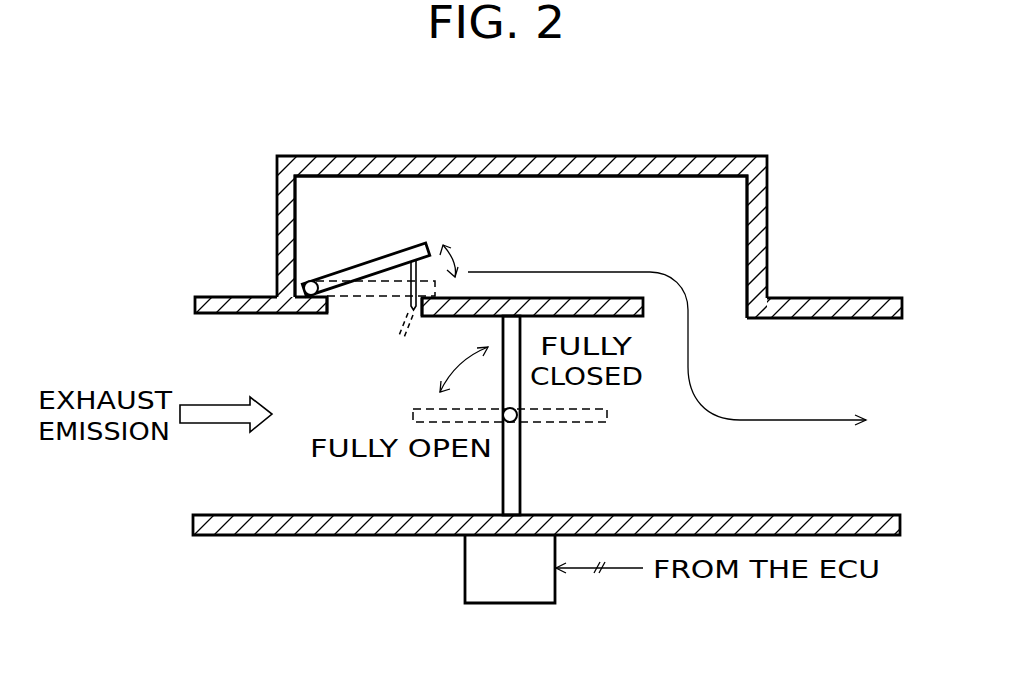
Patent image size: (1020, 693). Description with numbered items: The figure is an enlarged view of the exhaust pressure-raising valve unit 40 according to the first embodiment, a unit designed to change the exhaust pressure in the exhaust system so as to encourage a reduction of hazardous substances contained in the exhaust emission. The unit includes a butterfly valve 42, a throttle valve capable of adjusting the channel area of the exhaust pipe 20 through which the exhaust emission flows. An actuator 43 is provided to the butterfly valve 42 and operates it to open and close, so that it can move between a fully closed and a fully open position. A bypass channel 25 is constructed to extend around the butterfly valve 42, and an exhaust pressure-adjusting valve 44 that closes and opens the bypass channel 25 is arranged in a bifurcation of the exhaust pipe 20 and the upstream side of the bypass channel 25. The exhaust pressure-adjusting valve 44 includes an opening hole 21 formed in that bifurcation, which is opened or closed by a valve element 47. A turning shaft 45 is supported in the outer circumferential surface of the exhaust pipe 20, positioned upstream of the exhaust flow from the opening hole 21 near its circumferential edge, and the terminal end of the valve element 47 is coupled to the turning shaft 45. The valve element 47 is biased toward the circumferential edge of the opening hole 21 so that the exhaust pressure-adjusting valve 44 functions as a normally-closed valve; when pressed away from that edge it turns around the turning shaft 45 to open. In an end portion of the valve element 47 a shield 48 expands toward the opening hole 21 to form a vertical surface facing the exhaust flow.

The exhaust pipe 20 is at (233, 300).
The opening hole 21 is at (330, 308).
The bypass channel 25 is at (521, 213).
The exhaust pressure-raising valve unit 40 is at (623, 147).
The butterfly valve 42 is at (510, 470).
The actuator 43 is at (500, 590).
The exhaust pressure-adjusting valve 44 is at (348, 258).
The turning shaft 45 is at (308, 280).
The valve element 47 is at (380, 263).
The shield 48 is at (405, 290).